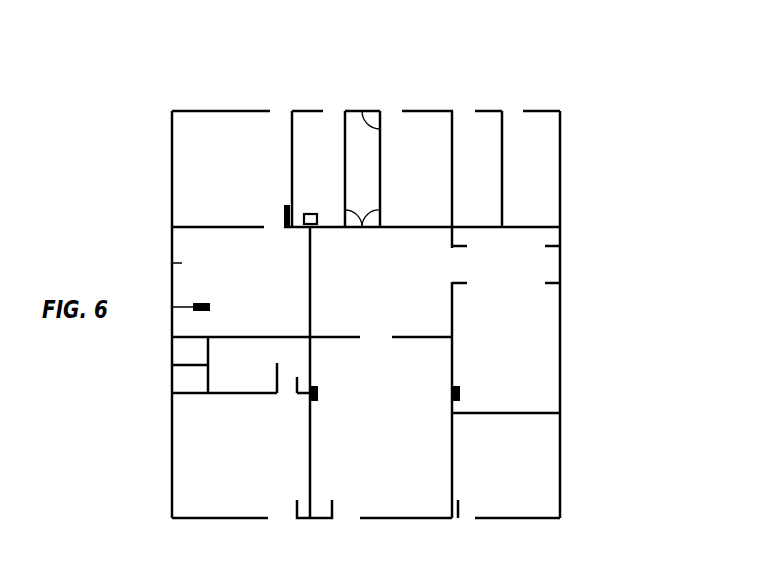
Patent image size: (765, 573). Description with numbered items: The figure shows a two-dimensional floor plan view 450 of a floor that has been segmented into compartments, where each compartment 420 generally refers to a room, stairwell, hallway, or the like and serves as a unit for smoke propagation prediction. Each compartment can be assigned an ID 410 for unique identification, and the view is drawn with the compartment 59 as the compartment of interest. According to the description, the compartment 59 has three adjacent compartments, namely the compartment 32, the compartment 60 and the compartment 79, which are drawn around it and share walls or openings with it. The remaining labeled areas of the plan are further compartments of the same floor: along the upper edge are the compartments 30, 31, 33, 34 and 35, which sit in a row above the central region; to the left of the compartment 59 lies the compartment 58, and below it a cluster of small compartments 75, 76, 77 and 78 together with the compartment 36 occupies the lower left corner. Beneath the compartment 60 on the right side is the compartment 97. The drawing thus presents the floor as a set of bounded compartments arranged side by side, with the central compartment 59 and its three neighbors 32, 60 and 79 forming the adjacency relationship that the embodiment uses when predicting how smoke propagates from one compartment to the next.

The two-dimensional floor plan view 450 is at (524, 38).
The ID 410 is at (328, 112).
The compartment 420 is at (562, 350).
The room 30 is at (221, 169).
The room 31 is at (303, 169).
The compartment 32 is at (362, 169).
The room 33 is at (419, 169).
The room 34 is at (479, 169).
The room 35 is at (533, 126).
The room 58 is at (266, 372).
The compartment 59 is at (416, 393).
The compartment 60 is at (506, 342).
The closet 75 is at (190, 365).
The closet 76 is at (224, 380).
The room 77 is at (245, 367).
The doorway 78 is at (299, 371).
The room 36 is at (254, 458).
The compartment 79 is at (406, 464).
The room 97 is at (506, 465).